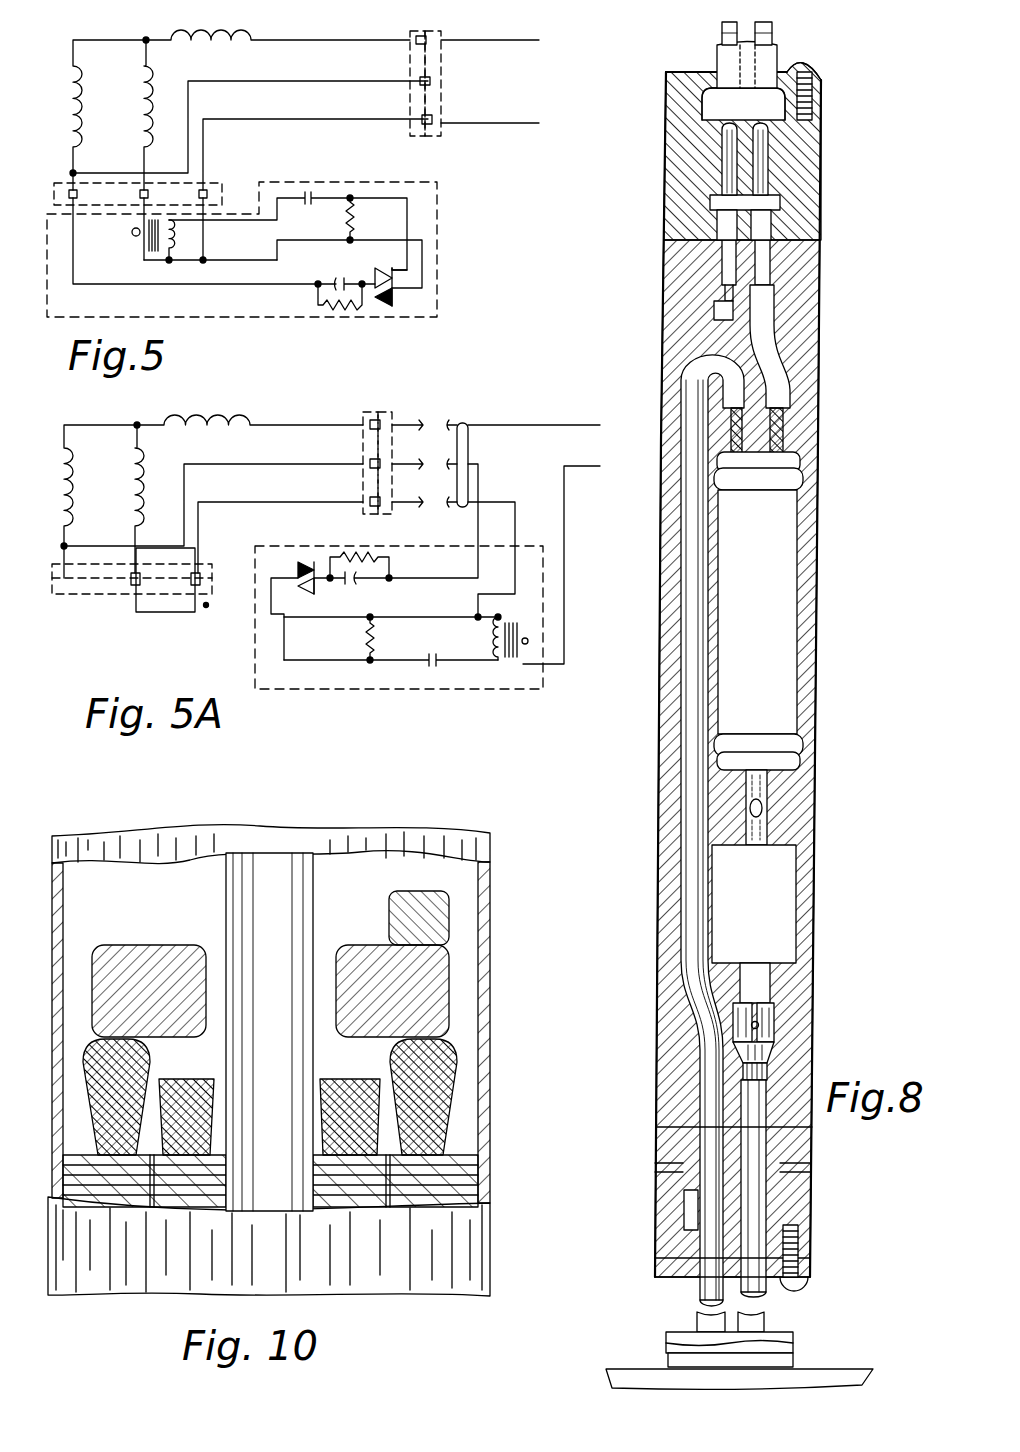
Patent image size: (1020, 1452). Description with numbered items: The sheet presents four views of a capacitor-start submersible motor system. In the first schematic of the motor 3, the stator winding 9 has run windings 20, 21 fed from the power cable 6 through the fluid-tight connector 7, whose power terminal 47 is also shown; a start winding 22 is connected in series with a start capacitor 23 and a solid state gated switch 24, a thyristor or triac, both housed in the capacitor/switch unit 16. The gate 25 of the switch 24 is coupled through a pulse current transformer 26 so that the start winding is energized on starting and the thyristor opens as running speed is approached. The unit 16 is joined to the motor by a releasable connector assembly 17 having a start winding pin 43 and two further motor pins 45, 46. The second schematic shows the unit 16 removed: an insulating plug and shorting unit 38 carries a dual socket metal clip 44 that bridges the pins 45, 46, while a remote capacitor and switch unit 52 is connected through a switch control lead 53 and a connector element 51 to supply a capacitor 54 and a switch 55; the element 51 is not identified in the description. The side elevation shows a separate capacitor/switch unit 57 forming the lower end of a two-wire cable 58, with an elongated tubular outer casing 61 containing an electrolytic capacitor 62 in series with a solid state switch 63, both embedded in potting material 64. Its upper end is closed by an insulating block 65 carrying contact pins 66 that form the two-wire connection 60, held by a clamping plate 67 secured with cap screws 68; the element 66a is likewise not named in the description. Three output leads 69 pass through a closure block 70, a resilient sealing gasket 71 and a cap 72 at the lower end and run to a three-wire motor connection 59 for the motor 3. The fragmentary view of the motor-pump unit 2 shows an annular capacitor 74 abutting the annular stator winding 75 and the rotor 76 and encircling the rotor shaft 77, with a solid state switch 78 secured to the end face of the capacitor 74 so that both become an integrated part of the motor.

In FIG. 10, the motor-pump unit 2 is at (490, 1031).
In FIG. 8, the motor 3 is at (622, 1366).
In FIG. 5, the power cable 6 is at (518, 122).
In FIG. 5, the fluid-tight connector 7 is at (405, 33).
In FIG. 5A, the fluid-tight connector 7 is at (361, 413).
In FIG. 5, the stator winding 9 is at (184, 113).
In FIG. 5A, the stator winding 9 is at (174, 493).
In FIG. 5, the capacitor/switch unit 16 is at (275, 316).
In FIG. 5, the releasable connector assembly 17 is at (226, 191).
In FIG. 5A, the releasable connector assembly 17 is at (206, 606).
In FIG. 5, the run winding 20 is at (230, 34).
In FIG. 5A, the run winding 20 is at (200, 412).
In FIG. 5, the run winding 21 is at (132, 108).
In FIG. 5A, the run winding 21 is at (124, 467).
In FIG. 5, the start winding 22 is at (63, 125).
In FIG. 5A, the start winding 22 is at (59, 498).
In FIG. 5, the start capacitor 23 is at (342, 305).
In FIG. 5A, the start capacitor 23 is at (368, 537).
In FIG. 5, the solid state gated switch 24 is at (390, 306).
In FIG. 5, the gate 25 is at (393, 270).
In FIG. 5, the pulse current transformer 26 is at (149, 251).
In FIG. 5A, the pulse current transformer 26 is at (511, 662).
In FIG. 5A, the insulating plug and shorting unit 38 is at (86, 594).
In FIG. 5, the start winding pin 43 is at (60, 195).
In FIG. 5A, the start winding pin 43 is at (62, 555).
In FIG. 5A, the dual socket metal clip 44 is at (159, 612).
In FIG. 5, the motor pin 45 is at (137, 198).
In FIG. 5A, the motor pin 45 is at (137, 556).
In FIG. 5, the motor pin 46 is at (205, 203).
In FIG. 5A, the motor pin 46 is at (200, 560).
In FIG. 5, the power terminal 47 is at (432, 120).
In FIG. 5A, the plug 51 is at (463, 422).
In FIG. 5A, the remote capacitor and switch unit 52 is at (544, 433).
In FIG. 5A, the switch control lead 53 is at (522, 478).
In FIG. 5A, the capacitor 54 is at (354, 584).
In FIG. 5A, the switch 55 is at (302, 587).
In FIG. 8, the capacitor/switch unit 57 is at (822, 559).
In FIG. 8, the two-wire cable 58 is at (716, 54).
In FIG. 8, the three-wire motor connection 59 is at (795, 1341).
In FIG. 8, the two-wire connection 60 is at (824, 147).
In FIG. 8, the outer casing 61 is at (807, 742).
In FIG. 8, the electrolytic capacitor 62 is at (779, 645).
In FIG. 8, the solid state switch 63 is at (783, 906).
In FIG. 8, the potting material 64 is at (781, 798).
In FIG. 8, the insulating block 65 is at (813, 170).
In FIG. 8, the contact pins 66 is at (712, 129).
In FIG. 8, the pin bores 66a is at (755, 190).
In FIG. 8, the clamping plate 67 is at (816, 88).
In FIG. 8, the cap screws 68 is at (805, 69).
In FIG. 8, the output leads 69 is at (692, 1291).
In FIG. 8, the closure block 70 is at (801, 1209).
In FIG. 8, the resilient sealing gasket 71 is at (688, 1230).
In FIG. 8, the cap 72 is at (803, 1275).
In FIG. 10, the annular capacitor 74 is at (166, 907).
In FIG. 10, the annular stator winding 75 is at (92, 1112).
In FIG. 10, the rotor 76 is at (193, 1200).
In FIG. 10, the rotor shaft 77 is at (286, 1037).
In FIG. 10, the solid state switch 78 is at (389, 914).